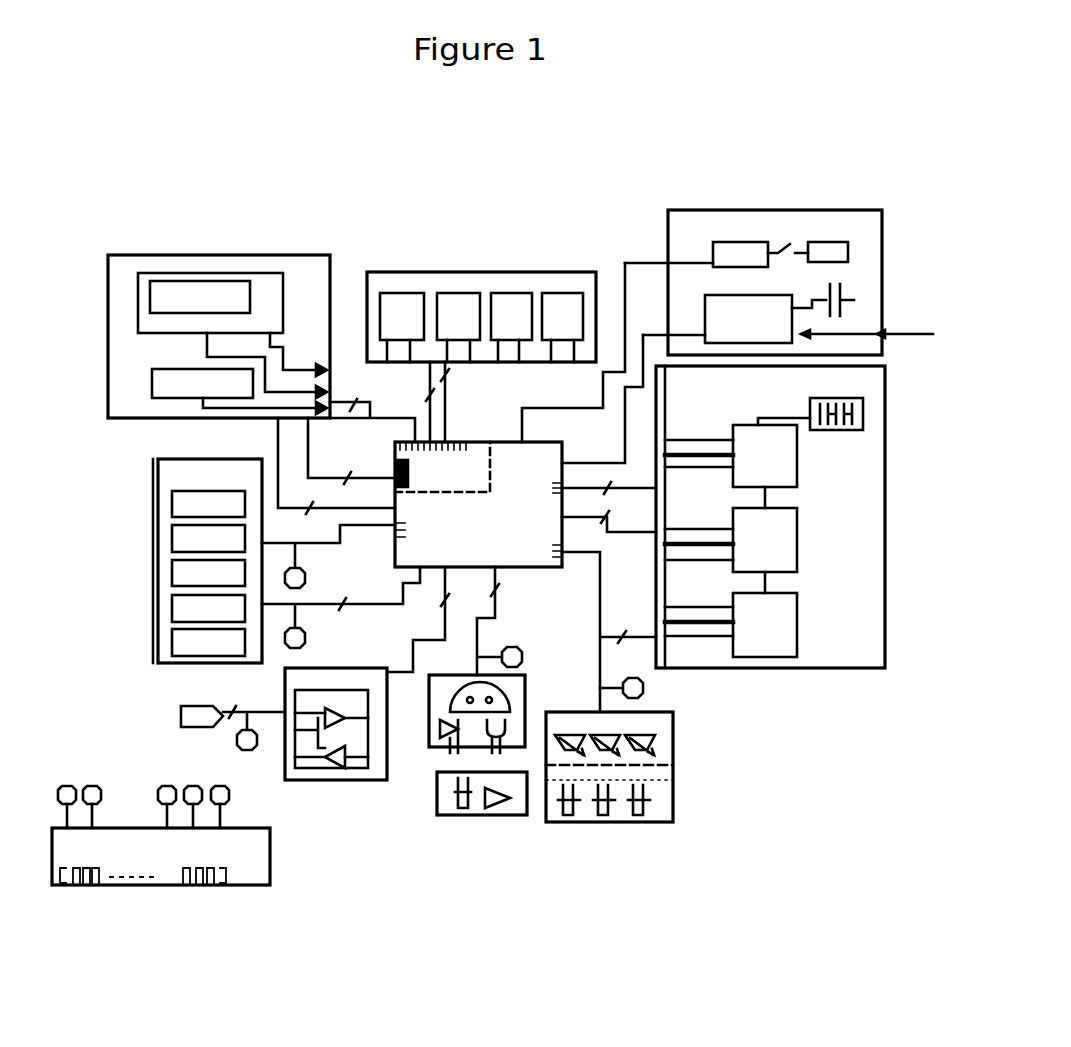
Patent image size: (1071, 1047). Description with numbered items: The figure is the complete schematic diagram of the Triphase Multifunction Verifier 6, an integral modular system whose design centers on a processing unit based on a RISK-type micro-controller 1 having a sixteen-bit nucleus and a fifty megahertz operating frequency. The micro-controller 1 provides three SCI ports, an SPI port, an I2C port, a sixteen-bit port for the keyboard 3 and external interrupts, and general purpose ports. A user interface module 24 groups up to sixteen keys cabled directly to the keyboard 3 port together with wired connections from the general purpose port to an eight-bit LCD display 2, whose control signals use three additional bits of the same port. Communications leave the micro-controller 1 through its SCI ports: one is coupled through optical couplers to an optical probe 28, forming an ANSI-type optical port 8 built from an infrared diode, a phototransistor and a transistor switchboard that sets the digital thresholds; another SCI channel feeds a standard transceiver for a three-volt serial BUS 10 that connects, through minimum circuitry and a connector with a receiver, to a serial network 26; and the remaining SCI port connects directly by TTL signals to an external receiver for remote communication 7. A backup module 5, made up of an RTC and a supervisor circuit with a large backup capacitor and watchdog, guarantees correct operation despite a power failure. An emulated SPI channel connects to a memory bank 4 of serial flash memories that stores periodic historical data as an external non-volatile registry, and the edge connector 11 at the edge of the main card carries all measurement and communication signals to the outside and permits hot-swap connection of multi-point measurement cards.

The micro-controller 1 is at (478, 483).
The LCD display 2 is at (172, 330).
The keyboard 3 is at (175, 388).
The memory bank 4 is at (457, 278).
The backup module 5 is at (700, 230).
The Triphase Multifunction Verifier 6 is at (857, 520).
The remote communication 7 is at (185, 470).
The optical port 8 is at (515, 685).
The RS 485 BUS 10 is at (196, 724).
The edge connector 11 is at (248, 845).
The user interface module 24 is at (464, 460).
The RS 485 network 26 is at (357, 679).
The optical probe 28 is at (505, 795).